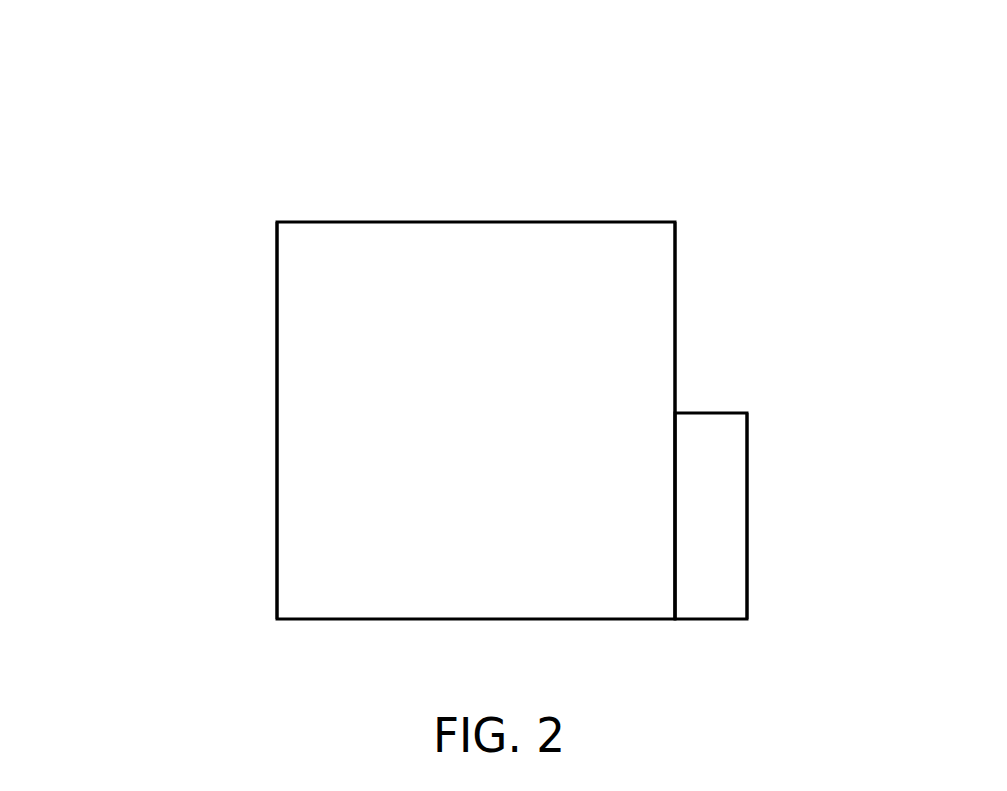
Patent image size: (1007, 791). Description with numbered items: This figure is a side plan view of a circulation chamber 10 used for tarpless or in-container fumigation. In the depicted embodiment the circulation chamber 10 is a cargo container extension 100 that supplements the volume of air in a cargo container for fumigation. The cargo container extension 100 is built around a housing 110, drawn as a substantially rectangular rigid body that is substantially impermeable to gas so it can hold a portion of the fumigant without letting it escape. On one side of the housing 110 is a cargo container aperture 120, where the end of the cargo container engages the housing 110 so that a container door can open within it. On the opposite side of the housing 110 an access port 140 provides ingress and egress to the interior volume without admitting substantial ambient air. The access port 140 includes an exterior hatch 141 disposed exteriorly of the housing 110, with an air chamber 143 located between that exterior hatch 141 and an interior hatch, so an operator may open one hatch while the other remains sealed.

The circulation chamber 10 is at (327, 187).
The cargo container extension 100 is at (597, 195).
The housing 110 is at (675, 260).
The cargo container aperture 120 is at (277, 363).
The access port 140 is at (713, 395).
The exterior hatch 141 is at (747, 495).
The air chamber 143 is at (717, 575).